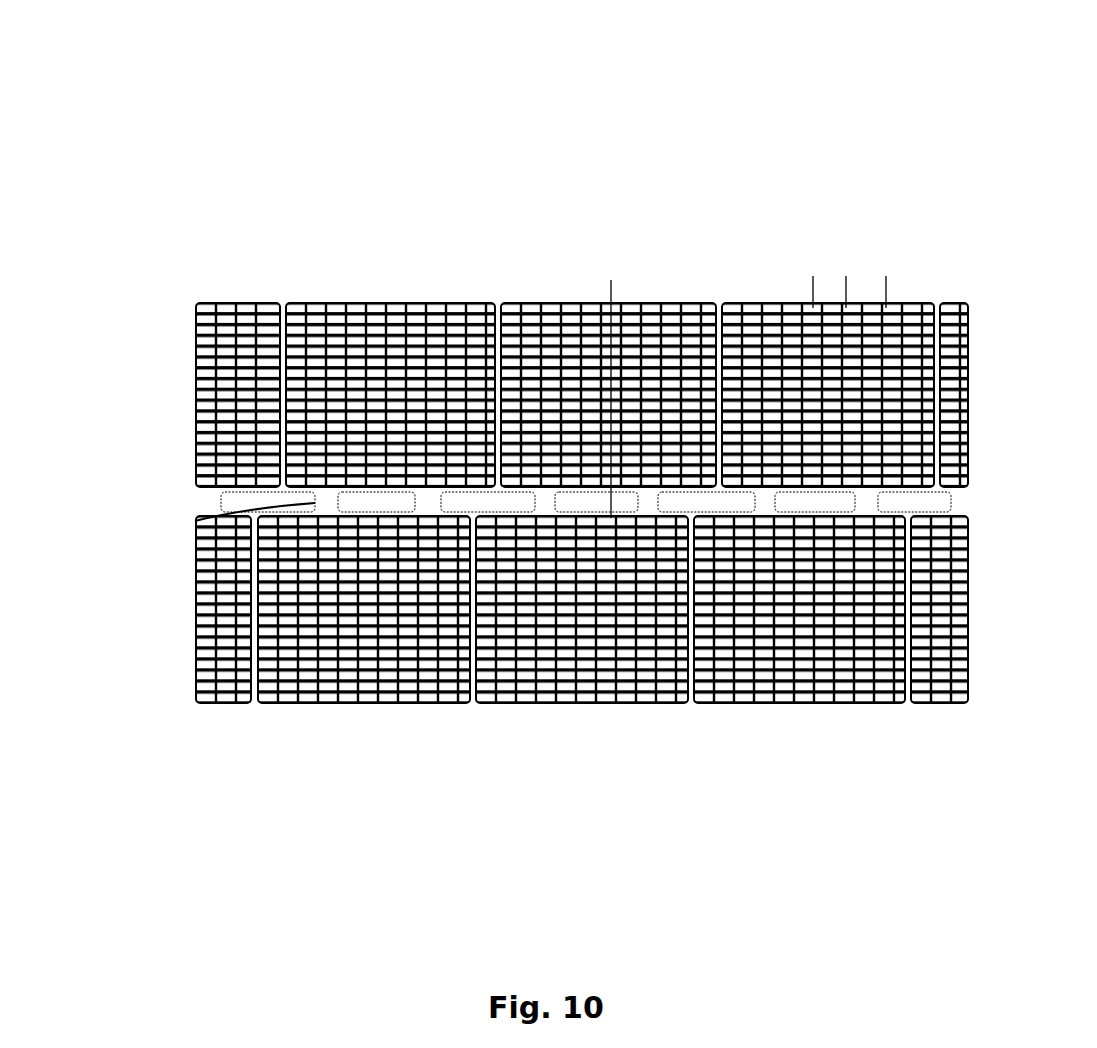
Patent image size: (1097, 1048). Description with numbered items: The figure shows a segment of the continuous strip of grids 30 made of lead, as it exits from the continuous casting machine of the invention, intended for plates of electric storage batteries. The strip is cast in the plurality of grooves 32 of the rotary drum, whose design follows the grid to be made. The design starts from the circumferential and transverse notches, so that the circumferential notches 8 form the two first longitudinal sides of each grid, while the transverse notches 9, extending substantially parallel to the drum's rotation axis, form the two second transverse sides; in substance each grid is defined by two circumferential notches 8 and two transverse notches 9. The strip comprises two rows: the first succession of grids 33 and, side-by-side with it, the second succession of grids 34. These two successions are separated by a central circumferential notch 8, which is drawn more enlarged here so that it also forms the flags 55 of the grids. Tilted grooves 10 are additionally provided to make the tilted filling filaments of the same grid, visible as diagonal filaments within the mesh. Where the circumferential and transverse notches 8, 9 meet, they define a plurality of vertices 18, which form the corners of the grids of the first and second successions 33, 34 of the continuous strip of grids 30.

The continuous strip of grids 30 is at (686, 160).
The grooves 32 is at (283, 216).
The first succession of grids 33 is at (150, 412).
The second succession of grids 34 is at (150, 622).
The circumferential notches 8 is at (188, 296).
The transverse notches 9 is at (897, 697).
The tilted grooves 10 is at (392, 320).
The vertices 18 is at (272, 290).
The flags 55 is at (423, 470).